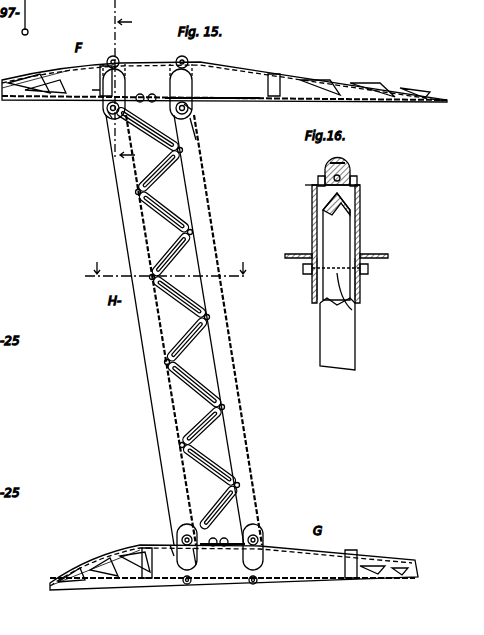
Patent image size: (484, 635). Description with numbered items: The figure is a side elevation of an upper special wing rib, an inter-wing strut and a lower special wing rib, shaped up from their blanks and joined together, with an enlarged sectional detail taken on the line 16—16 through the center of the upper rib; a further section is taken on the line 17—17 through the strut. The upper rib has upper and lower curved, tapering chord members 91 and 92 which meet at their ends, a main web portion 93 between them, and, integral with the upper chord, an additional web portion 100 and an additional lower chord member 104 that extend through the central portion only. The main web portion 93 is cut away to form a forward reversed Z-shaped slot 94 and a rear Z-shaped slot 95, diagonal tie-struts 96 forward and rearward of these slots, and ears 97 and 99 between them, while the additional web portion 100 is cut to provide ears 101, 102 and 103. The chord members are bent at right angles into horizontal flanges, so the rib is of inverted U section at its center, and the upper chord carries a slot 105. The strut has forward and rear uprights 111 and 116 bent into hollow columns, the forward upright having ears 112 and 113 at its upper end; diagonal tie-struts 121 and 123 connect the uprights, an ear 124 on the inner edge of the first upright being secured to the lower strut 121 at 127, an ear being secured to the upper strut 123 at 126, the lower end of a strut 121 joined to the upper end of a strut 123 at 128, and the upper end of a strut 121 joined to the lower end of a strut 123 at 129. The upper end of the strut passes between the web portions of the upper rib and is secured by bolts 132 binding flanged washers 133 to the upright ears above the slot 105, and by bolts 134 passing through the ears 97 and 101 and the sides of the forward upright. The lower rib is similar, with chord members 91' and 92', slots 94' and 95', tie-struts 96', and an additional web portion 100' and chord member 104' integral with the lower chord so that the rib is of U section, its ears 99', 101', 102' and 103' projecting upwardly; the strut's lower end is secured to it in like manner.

In FIG. 15, the upper chord member 91 is at (224, 68).
In FIG. 16, the upper chord member 91 is at (290, 171).
In FIG. 15, the lower chord member 92 is at (37, 98).
In FIG. 16, the lower chord member 92 is at (386, 244).
In FIG. 16, the main web portion 93 is at (362, 216).
In FIG. 15, the forward reversed Z-shaped slot 94 is at (92, 96).
In FIG. 15, the rear Z-shaped slot 95 is at (290, 73).
In FIG. 15, the diagonal tie-struts 96 is at (219, 89).
In FIG. 16, the ear 97 is at (366, 272).
In FIG. 15, the ear 99 is at (173, 94).
In FIG. 15, the additional web portion 100 is at (198, 62).
In FIG. 16, the additional web portion 100 is at (297, 213).
In FIG. 15, the ear 101 is at (115, 98).
In FIG. 16, the ear 101 is at (319, 279).
In FIG. 15, the ear 102 is at (205, 109).
In FIG. 15, the ear 103 is at (100, 159).
In FIG. 15, the additional lower chord member 104 is at (239, 112).
In FIG. 16, the additional lower chord member 104 is at (296, 242).
In FIG. 16, the slot 105 is at (356, 200).
In FIG. 15, the forward upright 111 is at (130, 216).
In FIG. 16, the forward upright 111 is at (330, 345).
In FIG. 16, the ear 112 is at (352, 166).
In FIG. 16, the ear 113 is at (333, 165).
In FIG. 15, the rear upright 116 is at (208, 220).
In FIG. 15, the diagonal tie-struts 121 is at (158, 198).
In FIG. 15, the diagonal tie-struts 123 is at (130, 122).
In FIG. 15, the ear 124 is at (170, 500).
In FIG. 15, the securing point 126 is at (110, 118).
In FIG. 15, the securing point 127 is at (192, 566).
In FIG. 15, the securing point 128 is at (250, 370).
In FIG. 15, the securing point 129 is at (196, 140).
In FIG. 15, the bolts 132 is at (118, 60).
In FIG. 16, the bolts 132 is at (333, 176).
In FIG. 16, the flanged washers 133 is at (320, 180).
In FIG. 15, the bolts 134 is at (190, 110).
In FIG. 16, the bolts 134 is at (350, 306).
In FIG. 15, the section line 16— 16 is at (125, 89).
In FIG. 15, the section line 17— 17 is at (171, 267).
In FIG. 15, the upper chord member 91' is at (234, 554).
In FIG. 15, the lower chord member 92' is at (96, 582).
In FIG. 15, the forward reversed Z-shaped slot 94' is at (138, 581).
In FIG. 15, the rear Z-shaped slot 95' is at (373, 552).
In FIG. 15, the diagonal tie-struts 96' is at (237, 567).
In FIG. 15, the ear 99' is at (272, 527).
In FIG. 15, the additional web portion 100' is at (298, 587).
In FIG. 15, the ear 101' is at (167, 551).
In FIG. 15, the ear 102' is at (254, 523).
In FIG. 15, the ear 103' is at (217, 507).
In FIG. 15, the additional chord member 104' is at (266, 524).